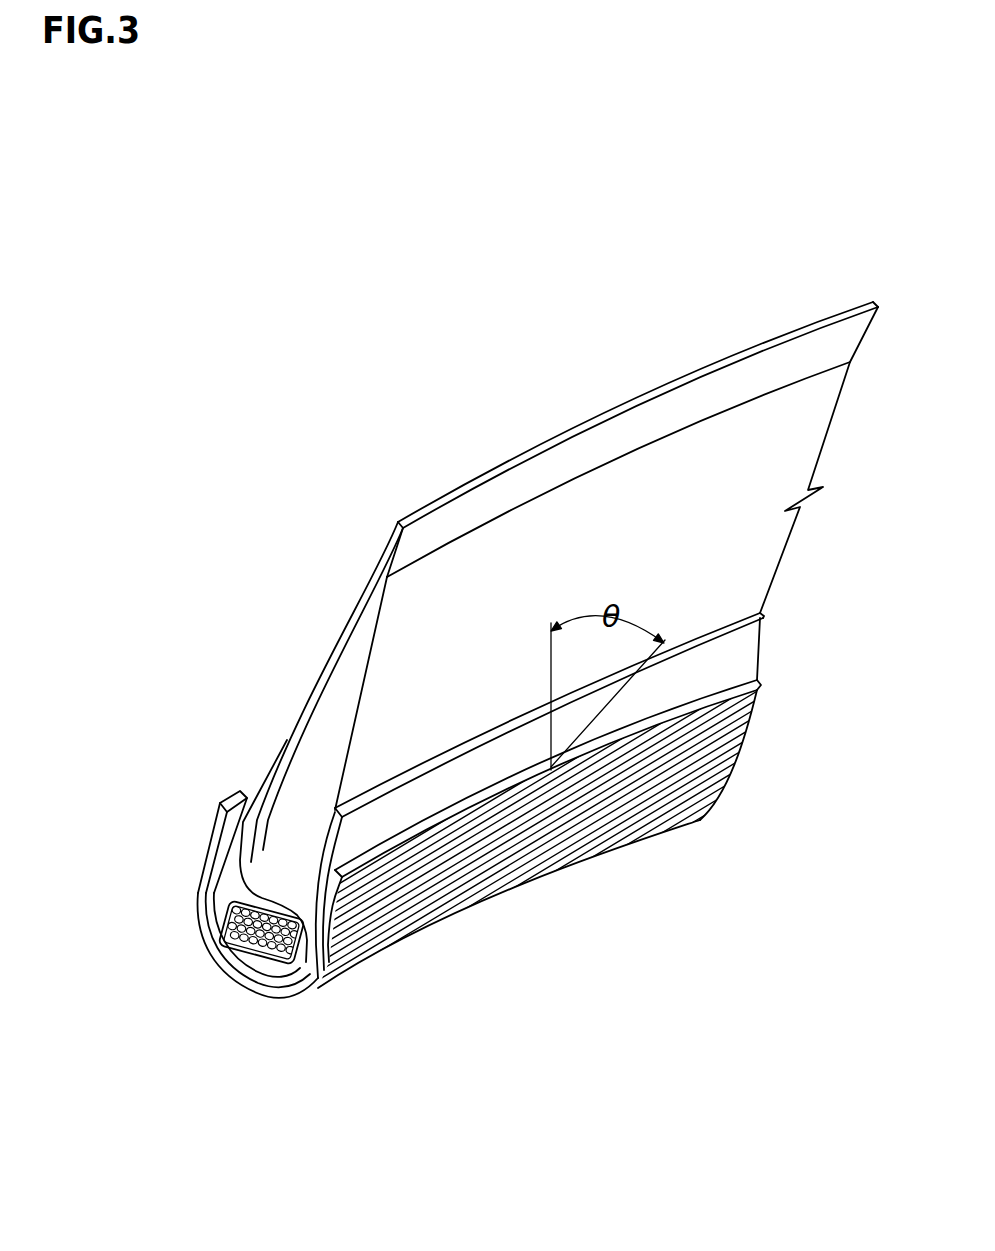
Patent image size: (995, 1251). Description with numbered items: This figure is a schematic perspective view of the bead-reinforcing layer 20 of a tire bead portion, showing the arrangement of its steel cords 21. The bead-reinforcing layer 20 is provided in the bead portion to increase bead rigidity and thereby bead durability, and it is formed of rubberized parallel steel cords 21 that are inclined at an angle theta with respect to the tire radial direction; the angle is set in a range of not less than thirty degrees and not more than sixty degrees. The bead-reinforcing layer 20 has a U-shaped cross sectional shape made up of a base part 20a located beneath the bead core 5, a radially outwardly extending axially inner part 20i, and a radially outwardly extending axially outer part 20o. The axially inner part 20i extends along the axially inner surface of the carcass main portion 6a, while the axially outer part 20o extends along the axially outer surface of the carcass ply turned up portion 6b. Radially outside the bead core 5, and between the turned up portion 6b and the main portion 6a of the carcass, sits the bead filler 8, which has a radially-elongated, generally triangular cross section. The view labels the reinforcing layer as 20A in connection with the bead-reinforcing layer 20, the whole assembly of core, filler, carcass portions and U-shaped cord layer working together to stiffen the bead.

The carcass main portion 6a is at (337, 643).
The carcass ply turned up portion 6b is at (717, 662).
The bead filler 8 is at (318, 727).
The bead-reinforcing layer 20 is at (479, 862).
The weather strip attachment base 20A is at (643, 808).
The axially inner part 20i is at (210, 842).
The axially outer part 20o is at (393, 930).
The base part 20a is at (255, 987).
The steel cords 21 is at (483, 877).
The bead core 5 is at (233, 935).